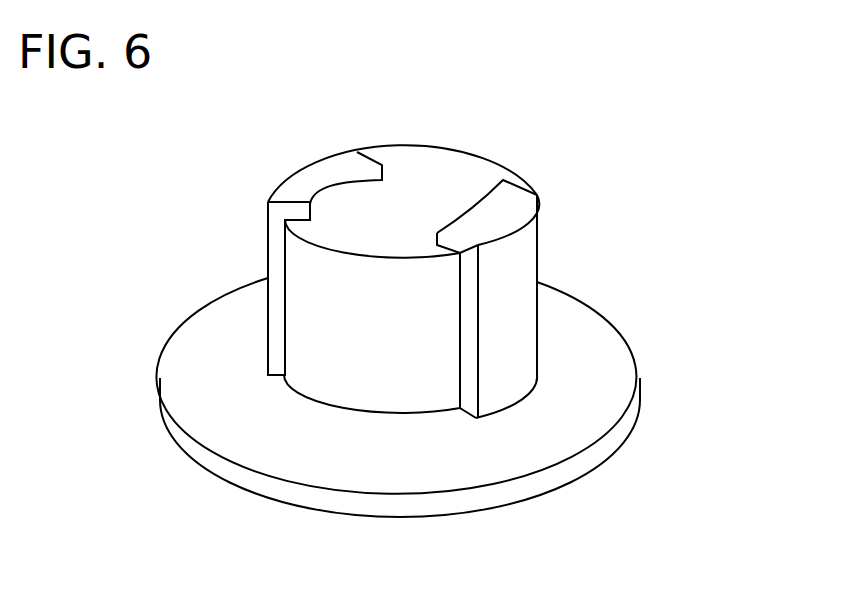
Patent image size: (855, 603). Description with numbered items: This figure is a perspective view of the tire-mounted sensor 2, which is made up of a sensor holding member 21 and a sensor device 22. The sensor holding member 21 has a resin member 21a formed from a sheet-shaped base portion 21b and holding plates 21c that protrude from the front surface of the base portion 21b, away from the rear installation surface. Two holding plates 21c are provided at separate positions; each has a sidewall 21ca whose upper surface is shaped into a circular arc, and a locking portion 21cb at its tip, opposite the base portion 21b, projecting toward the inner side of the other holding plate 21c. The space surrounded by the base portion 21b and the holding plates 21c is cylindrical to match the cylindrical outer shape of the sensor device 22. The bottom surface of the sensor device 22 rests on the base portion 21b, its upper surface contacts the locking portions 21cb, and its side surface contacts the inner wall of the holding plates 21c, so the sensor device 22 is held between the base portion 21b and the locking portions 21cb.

The tire-mounted sensor 2 is at (470, 296).
The sensor holding member 21 is at (470, 296).
The resin member 21a is at (536, 246).
The base portion 21b is at (631, 348).
The holding plate 21c is at (506, 283).
The sidewall 21ca is at (527, 238).
The locking portion 21cb is at (507, 197).
The sensor device 22 is at (421, 177).